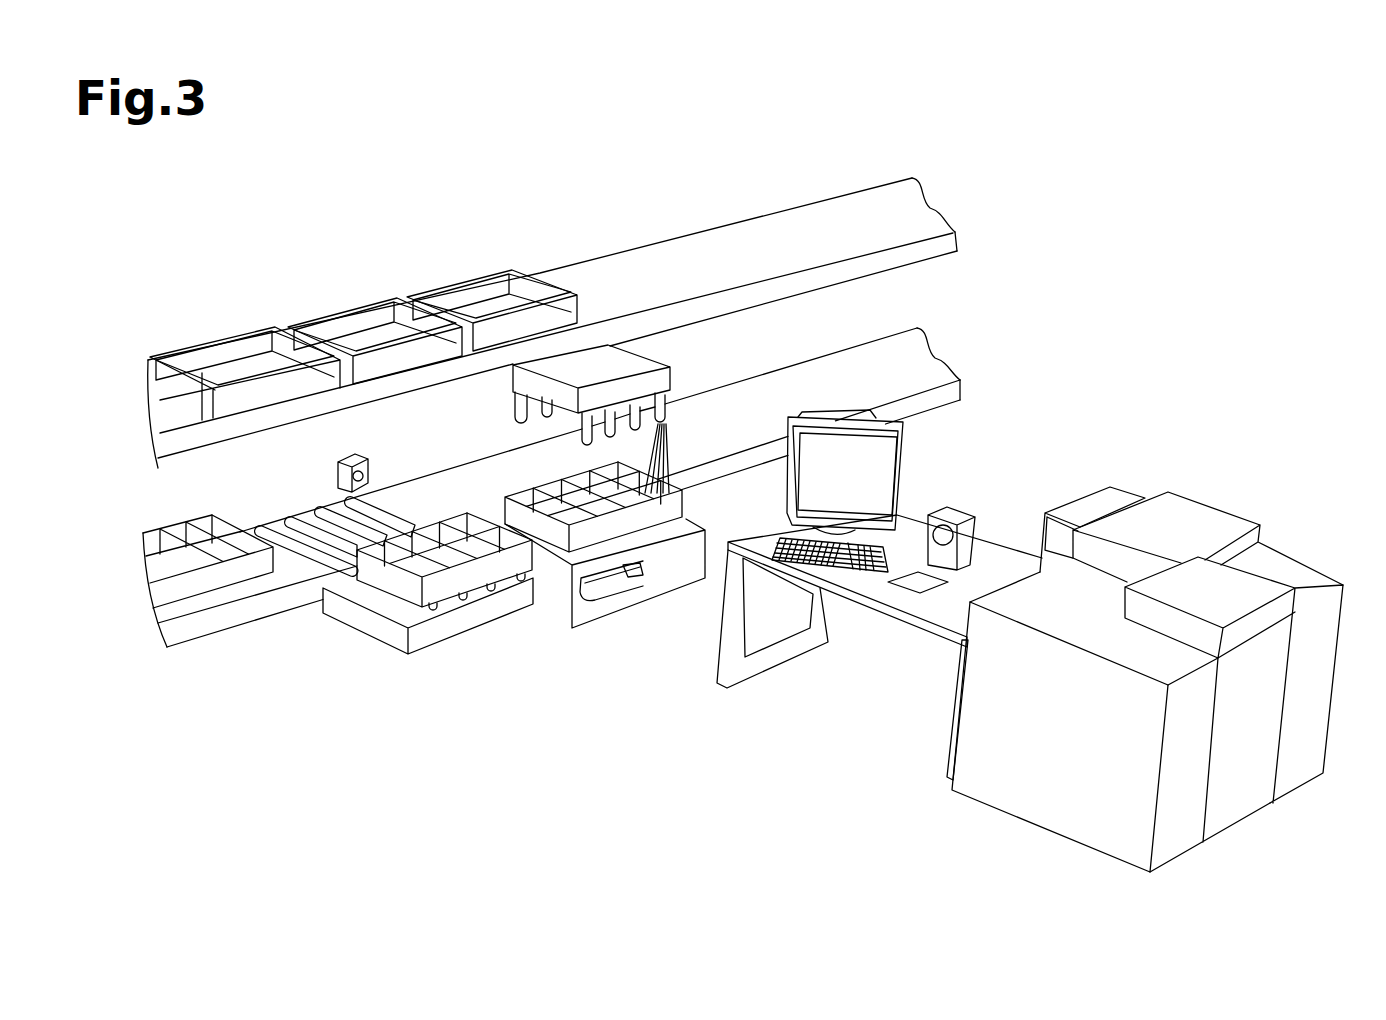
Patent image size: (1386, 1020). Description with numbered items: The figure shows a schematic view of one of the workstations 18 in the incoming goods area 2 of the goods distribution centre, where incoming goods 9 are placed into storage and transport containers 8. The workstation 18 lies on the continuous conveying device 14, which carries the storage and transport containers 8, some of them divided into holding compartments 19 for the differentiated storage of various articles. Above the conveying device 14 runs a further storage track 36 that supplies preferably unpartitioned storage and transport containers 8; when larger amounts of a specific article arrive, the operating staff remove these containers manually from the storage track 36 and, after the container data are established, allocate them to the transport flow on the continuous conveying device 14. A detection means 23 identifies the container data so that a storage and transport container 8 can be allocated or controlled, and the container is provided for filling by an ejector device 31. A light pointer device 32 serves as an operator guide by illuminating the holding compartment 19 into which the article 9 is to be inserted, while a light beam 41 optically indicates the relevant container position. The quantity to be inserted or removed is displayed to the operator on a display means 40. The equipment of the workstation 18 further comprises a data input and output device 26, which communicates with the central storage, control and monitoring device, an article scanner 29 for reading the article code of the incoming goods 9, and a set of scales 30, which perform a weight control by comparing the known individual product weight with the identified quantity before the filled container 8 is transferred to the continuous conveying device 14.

The incoming goods area 2 is at (1080, 322).
The storage and transport container 8 is at (362, 318).
The goods 9 is at (1018, 770).
The continuous conveying device 14 is at (905, 357).
The workstation 18 is at (625, 650).
The holding compartment 19 is at (213, 525).
The detection means 23 is at (363, 464).
The data input and output device 26 is at (917, 463).
The article scanner 29 is at (987, 494).
The scales 30 is at (667, 577).
The ejector device 31 is at (307, 555).
The light pointer device 32 is at (625, 350).
The storage track 36 is at (890, 213).
The display means 40 is at (600, 582).
The light beam 41 is at (686, 445).